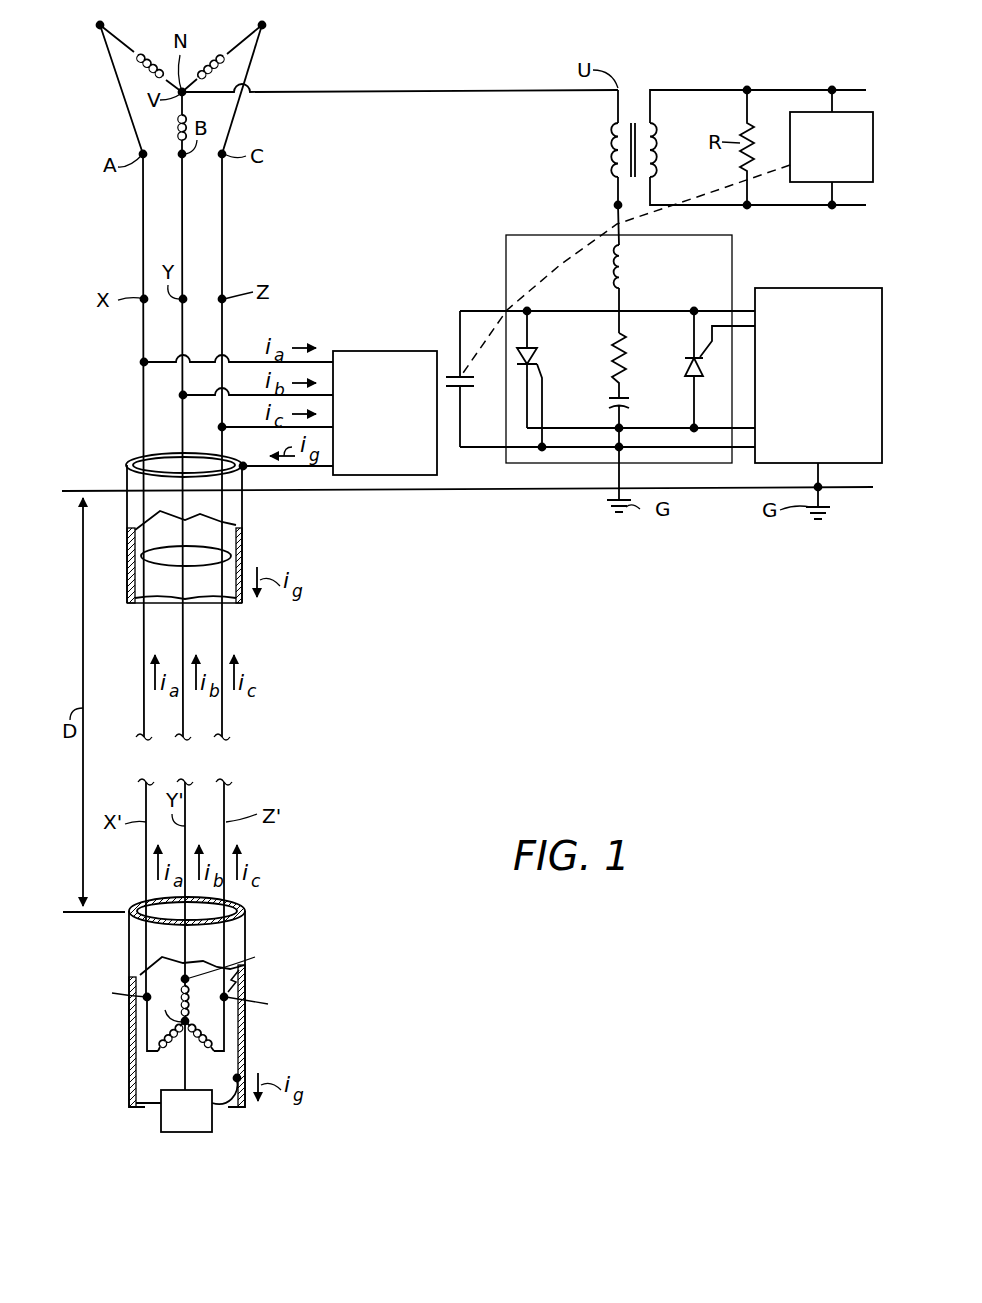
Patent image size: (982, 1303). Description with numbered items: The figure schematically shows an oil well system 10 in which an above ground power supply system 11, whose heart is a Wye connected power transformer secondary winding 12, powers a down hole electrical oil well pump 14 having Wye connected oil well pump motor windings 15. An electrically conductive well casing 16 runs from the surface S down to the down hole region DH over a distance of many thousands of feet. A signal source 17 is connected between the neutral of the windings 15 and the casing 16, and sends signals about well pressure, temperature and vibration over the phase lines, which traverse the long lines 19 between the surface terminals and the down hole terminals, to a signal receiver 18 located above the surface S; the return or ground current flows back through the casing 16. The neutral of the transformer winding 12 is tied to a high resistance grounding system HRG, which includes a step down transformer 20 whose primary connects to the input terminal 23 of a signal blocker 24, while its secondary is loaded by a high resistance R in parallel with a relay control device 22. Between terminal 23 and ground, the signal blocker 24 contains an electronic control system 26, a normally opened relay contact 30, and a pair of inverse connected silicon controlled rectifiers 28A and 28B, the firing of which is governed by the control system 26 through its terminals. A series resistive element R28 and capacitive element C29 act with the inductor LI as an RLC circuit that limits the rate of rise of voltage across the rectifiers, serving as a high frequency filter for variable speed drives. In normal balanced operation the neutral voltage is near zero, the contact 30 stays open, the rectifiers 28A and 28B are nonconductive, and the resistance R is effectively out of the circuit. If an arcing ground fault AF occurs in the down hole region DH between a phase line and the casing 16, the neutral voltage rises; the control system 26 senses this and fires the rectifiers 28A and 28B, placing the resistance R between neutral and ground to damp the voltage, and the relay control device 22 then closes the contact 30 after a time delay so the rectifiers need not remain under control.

The oil well system 10 is at (387, 616).
The above ground power supply system 11 is at (276, 132).
The Wye connected power transformer secondary winding 12 is at (110, 132).
The down hole electrical oil well pump 14 is at (114, 1054).
The oil well pump motor windings 15 is at (222, 1014).
The well casing 16 is at (230, 502).
The signal source 17 is at (192, 1133).
The signal receiver 18 is at (383, 351).
The long lines 19 is at (226, 554).
The step down transformer 20 is at (651, 81).
The relay control device 22 is at (790, 137).
The input terminal of signal blocker 23 is at (618, 205).
The signal blocker 24 is at (732, 250).
The electronic control system 26 is at (790, 287).
The silicon controlled rectifier 28A is at (688, 366).
The silicon controlled rectifier 28B is at (540, 358).
The normally opened relay contact 30 is at (455, 375).
The resistive element R28 is at (612, 357).
The capacitive element C29 is at (611, 407).
The inductor LI is at (631, 269).
The high resistance grounding system HRG is at (732, 77).
The down hole region DH is at (366, 1020).
The arcing ground fault AF is at (240, 978).
The surface S is at (108, 490).